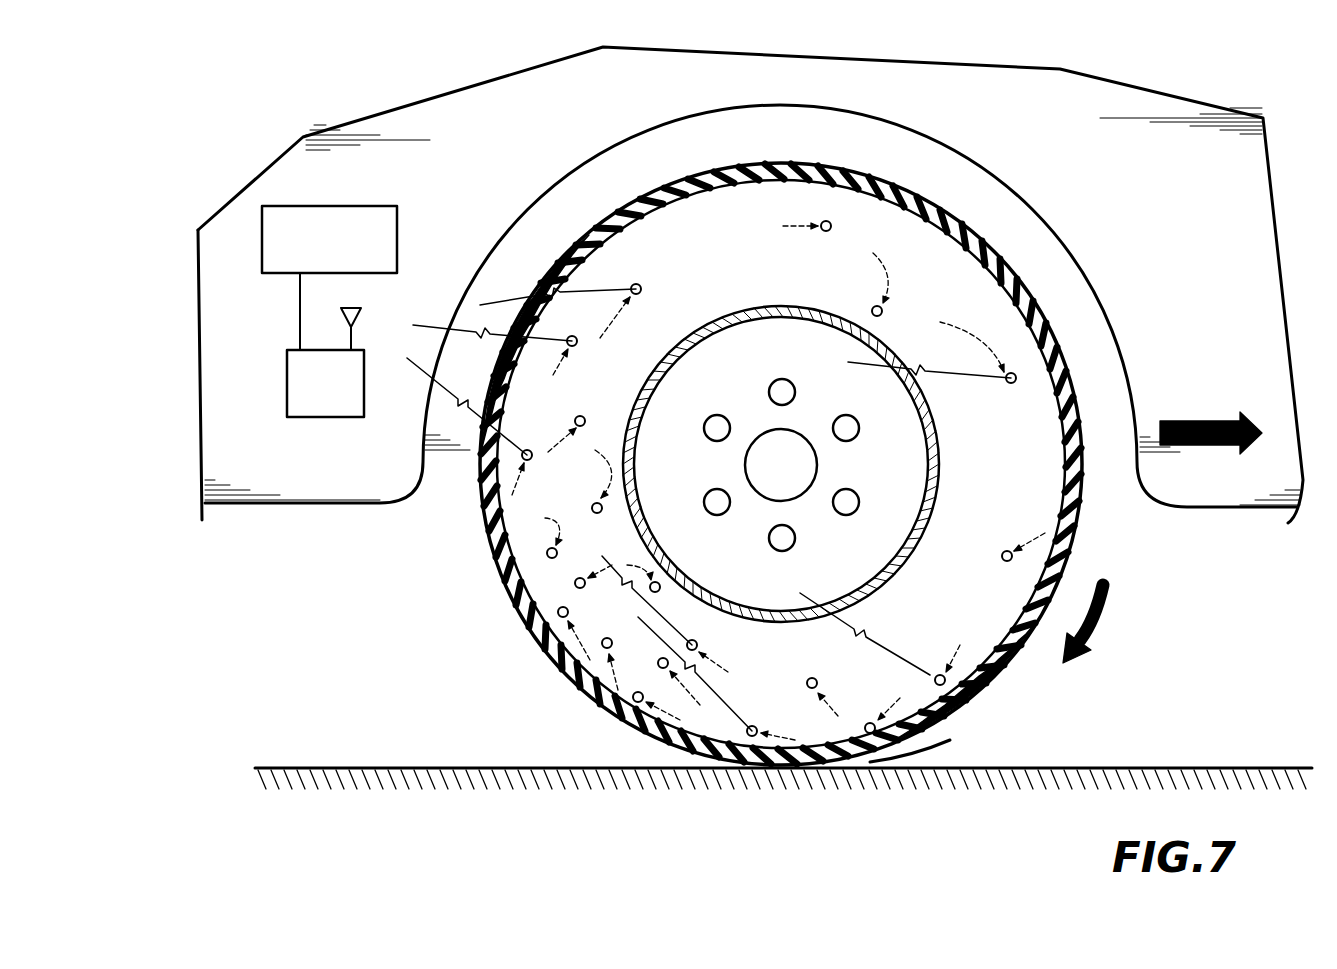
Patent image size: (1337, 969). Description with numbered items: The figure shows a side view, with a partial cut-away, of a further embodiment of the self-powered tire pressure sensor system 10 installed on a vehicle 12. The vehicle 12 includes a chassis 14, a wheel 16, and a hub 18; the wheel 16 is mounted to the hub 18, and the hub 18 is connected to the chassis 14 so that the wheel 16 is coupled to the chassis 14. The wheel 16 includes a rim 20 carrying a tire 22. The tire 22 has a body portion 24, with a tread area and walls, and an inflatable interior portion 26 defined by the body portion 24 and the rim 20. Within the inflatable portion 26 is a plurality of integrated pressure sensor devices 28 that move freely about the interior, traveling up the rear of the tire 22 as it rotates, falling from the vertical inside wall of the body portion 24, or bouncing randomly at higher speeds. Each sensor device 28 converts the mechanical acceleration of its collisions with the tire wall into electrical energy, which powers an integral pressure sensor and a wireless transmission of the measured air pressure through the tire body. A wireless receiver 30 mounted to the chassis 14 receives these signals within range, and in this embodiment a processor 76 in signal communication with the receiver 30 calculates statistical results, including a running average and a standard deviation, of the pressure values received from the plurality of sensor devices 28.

The self-powered tire pressure sensor system 10 is at (286, 671).
The vehicle 12 is at (1264, 99).
The chassis 14 is at (340, 464).
The wheel 16 is at (566, 703).
The hub 18 is at (792, 476).
The rim 20 is at (905, 470).
The tire 22 is at (978, 623).
The body portion 24 is at (512, 610).
The inflatable interior portion 26 is at (918, 697).
The integrated pressure sensor devices 28 is at (644, 289).
The wireless receiver 30 is at (287, 382).
The processor 76 is at (378, 206).